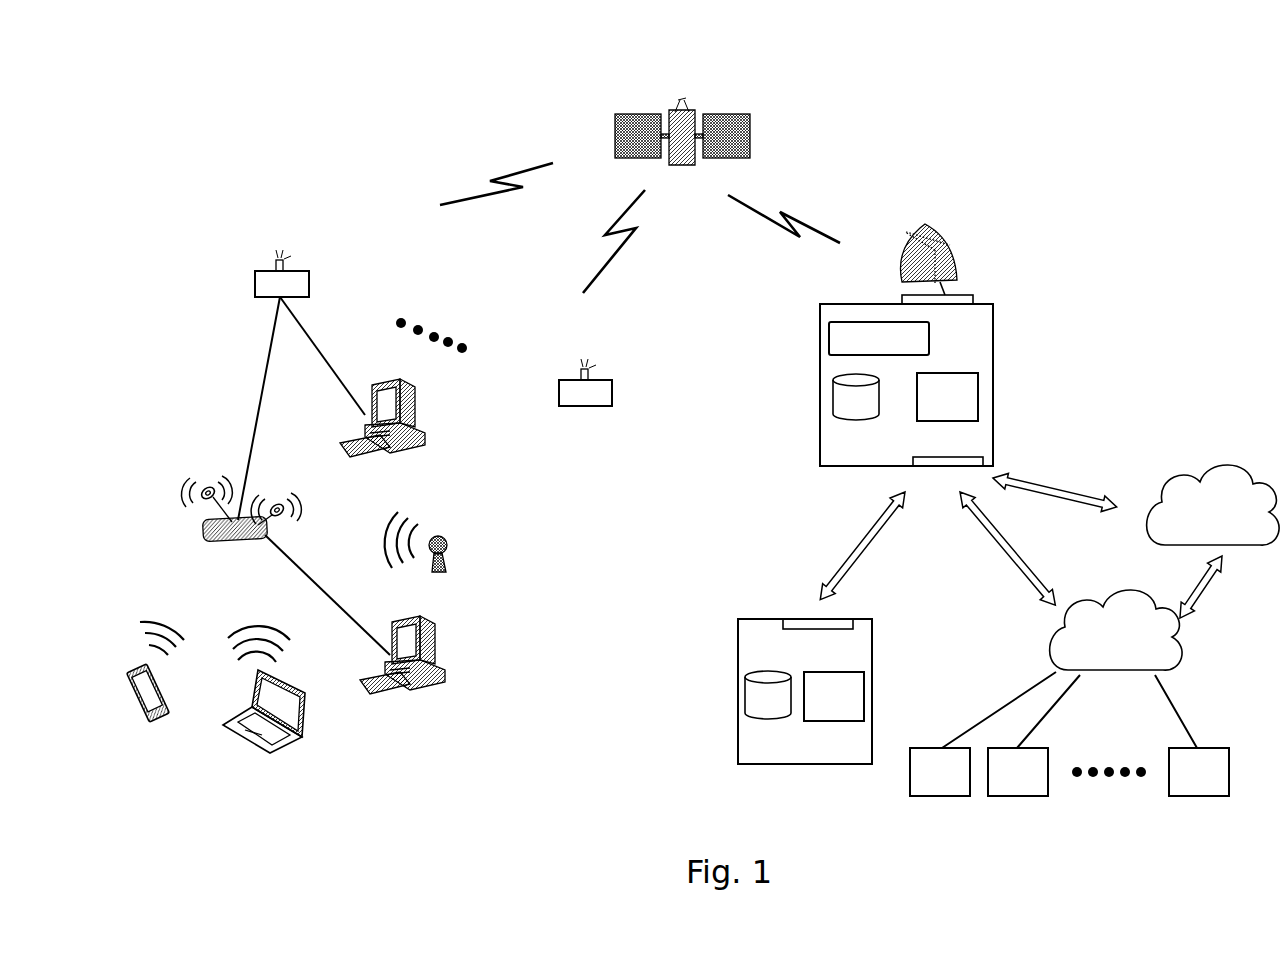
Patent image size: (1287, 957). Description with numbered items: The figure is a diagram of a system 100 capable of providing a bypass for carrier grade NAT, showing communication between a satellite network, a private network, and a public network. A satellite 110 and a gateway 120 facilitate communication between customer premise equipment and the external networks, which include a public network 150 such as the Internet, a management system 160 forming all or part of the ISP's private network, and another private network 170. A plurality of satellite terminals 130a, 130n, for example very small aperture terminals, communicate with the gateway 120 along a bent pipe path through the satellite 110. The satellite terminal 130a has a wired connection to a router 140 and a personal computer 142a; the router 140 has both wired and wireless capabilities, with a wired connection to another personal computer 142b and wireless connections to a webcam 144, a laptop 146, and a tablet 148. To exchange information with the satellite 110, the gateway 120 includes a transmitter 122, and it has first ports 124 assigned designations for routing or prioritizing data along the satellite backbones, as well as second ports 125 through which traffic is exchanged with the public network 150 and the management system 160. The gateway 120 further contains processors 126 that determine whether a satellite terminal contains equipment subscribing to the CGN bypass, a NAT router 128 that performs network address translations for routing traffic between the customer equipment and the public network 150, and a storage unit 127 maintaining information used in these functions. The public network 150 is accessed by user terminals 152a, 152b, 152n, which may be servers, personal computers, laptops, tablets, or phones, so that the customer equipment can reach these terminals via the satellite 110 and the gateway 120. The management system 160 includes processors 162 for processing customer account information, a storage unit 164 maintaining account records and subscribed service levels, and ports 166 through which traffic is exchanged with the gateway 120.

The satellite communication system 100 is at (1093, 92).
The satellite 110 is at (709, 131).
The gateway 120 is at (916, 380).
The transmitter 122 is at (947, 258).
The first ports 124 is at (957, 302).
The second ports 125 is at (963, 458).
The processors 126 is at (947, 397).
The storage unit 127 is at (856, 397).
The NAT router 128 is at (896, 338).
The satellite terminal 130a is at (261, 273).
The satellite terminal 130n is at (609, 382).
The router 140 is at (242, 519).
The personal computer 142a is at (397, 424).
The computer 142b is at (405, 668).
The webcam 144 is at (440, 542).
The laptop 146 is at (264, 702).
The tablet 148 is at (155, 684).
The public network 150 is at (1116, 642).
The user terminal 152a is at (940, 781).
The user terminal 152b is at (1018, 781).
The user terminal 152n is at (1199, 781).
The management system 160 is at (786, 662).
The processors 162 is at (834, 696).
The storage unit 164 is at (768, 695).
The ports 166 is at (808, 622).
The private network 170 is at (1213, 488).